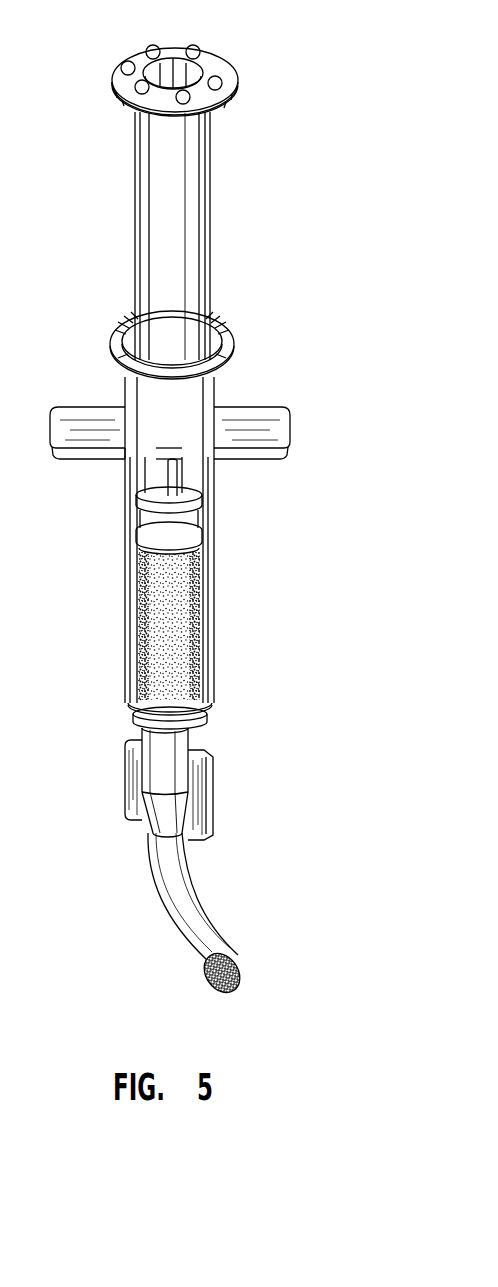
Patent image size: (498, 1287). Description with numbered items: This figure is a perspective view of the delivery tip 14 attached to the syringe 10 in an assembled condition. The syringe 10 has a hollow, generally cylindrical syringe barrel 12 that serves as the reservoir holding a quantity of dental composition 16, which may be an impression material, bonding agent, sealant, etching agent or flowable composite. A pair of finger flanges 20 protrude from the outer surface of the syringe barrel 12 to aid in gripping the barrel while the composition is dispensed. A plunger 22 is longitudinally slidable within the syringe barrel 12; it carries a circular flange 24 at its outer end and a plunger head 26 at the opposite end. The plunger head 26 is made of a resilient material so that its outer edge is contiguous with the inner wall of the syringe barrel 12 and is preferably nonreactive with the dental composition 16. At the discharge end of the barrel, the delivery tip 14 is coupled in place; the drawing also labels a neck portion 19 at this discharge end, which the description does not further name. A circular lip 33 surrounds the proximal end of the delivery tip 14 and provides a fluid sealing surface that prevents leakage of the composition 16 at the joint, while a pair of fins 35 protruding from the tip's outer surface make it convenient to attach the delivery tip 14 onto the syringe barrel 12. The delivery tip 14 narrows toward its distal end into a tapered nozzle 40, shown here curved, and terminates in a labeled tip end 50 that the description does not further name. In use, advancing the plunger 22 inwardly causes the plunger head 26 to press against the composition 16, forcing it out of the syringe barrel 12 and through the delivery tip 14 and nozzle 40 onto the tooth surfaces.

The syringe 10 is at (290, 513).
The syringe barrel 12 is at (127, 610).
The delivery tip 14 is at (152, 901).
The dental composition 16 is at (168, 647).
The barrel neck / outlet 19 is at (200, 742).
The finger flanges 20 is at (95, 417).
The plunger 22 is at (190, 228).
The circular flange 24 is at (205, 63).
The plunger head 26 is at (153, 532).
The circular lip 33 is at (205, 728).
The fins 35 is at (192, 818).
The tapered nozzle 40 is at (182, 880).
The brush tip 50 is at (233, 962).